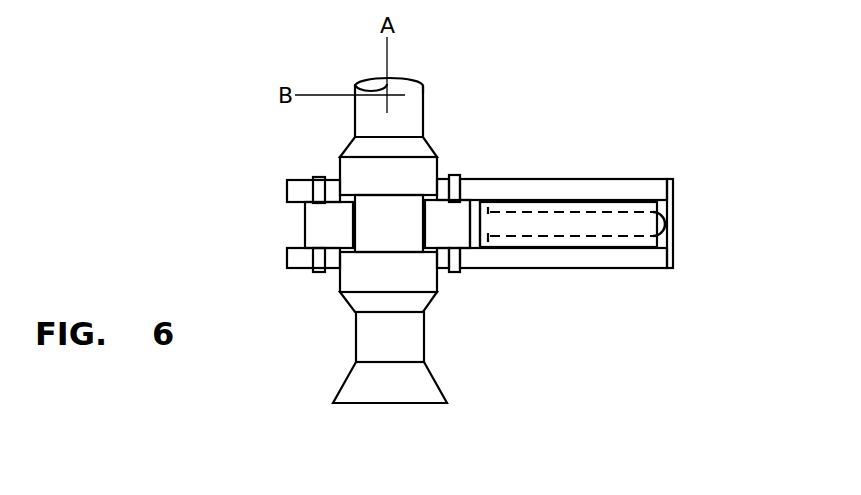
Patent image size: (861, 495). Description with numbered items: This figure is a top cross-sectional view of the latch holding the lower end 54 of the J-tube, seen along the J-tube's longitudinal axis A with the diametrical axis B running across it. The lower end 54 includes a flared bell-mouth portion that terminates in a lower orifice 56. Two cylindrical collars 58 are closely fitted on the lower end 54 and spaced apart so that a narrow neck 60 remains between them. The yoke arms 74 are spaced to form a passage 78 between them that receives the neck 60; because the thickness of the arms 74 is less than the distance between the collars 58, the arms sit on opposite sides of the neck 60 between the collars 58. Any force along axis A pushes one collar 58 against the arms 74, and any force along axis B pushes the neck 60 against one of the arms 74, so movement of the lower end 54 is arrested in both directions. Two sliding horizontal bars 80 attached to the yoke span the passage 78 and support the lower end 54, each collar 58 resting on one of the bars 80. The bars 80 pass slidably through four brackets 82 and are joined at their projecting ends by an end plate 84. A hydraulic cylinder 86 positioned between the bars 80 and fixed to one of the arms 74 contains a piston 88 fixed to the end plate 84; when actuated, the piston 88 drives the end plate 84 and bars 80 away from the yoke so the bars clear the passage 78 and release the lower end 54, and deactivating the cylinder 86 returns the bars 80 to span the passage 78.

The lower end 54 is at (418, 94).
The lower orifice 56 is at (447, 403).
The cylindrical collars 58 is at (437, 156).
The neck 60 is at (387, 227).
The yoke arms 74 is at (317, 227).
The passage 78 is at (343, 193).
The sliding horizontal bars 80 is at (530, 179).
The brackets 82 is at (317, 187).
The end plate 84 is at (673, 240).
The hydraulic cylinder 86 is at (577, 211).
The piston 88 is at (658, 222).